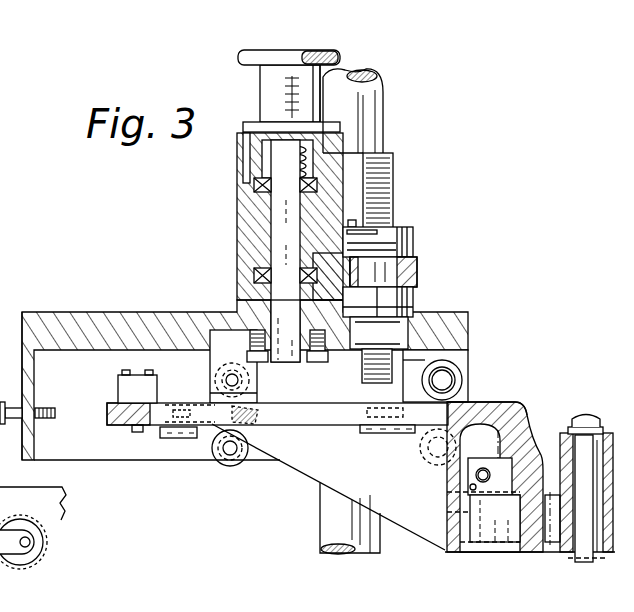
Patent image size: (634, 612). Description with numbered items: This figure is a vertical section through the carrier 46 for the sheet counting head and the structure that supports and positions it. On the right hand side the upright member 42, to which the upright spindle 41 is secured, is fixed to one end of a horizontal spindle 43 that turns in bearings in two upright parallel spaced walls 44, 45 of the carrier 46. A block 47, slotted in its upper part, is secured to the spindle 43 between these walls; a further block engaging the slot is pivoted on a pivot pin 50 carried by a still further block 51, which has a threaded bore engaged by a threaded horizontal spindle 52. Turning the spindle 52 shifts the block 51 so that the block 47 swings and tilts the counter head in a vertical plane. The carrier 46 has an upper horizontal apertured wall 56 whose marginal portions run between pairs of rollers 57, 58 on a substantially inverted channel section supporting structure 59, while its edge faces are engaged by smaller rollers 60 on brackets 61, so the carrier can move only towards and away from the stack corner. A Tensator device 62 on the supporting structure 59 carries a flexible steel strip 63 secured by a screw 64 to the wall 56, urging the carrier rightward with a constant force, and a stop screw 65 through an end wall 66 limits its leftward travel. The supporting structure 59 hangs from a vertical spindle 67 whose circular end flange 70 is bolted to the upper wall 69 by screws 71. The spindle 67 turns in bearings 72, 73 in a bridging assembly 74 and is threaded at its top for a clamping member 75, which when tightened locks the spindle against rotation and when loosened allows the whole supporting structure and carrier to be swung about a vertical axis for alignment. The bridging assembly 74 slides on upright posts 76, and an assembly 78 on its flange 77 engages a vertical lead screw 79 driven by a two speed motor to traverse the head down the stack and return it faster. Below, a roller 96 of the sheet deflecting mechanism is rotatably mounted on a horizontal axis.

The upright spindle 41 is at (583, 542).
The upright member 42 is at (600, 431).
The horizontal spindle 43 is at (527, 535).
The upright wall 44 is at (530, 453).
The upright wall 45 is at (457, 500).
The carrier 46 is at (347, 484).
The block 47 is at (490, 545).
The pivot pin 50 is at (505, 427).
The still further block 51 is at (468, 472).
The horizontal spindle 52 is at (528, 420).
The upper horizontal apertured wall 56 is at (317, 421).
The roller 57 is at (463, 378).
The roller 58 is at (251, 452).
The supporting structure 59 is at (26, 311).
The smaller roller 60 is at (173, 402).
The bracket 61 is at (184, 405).
The Tensator device 62 is at (260, 409).
The flexible steel strip 63 is at (218, 427).
The screw 64 is at (133, 430).
The stop screw 65 is at (48, 408).
The end wall 66 is at (30, 433).
The vertical spindle 67 is at (278, 228).
The upper wall 69 is at (118, 318).
The circular end flange 70 is at (287, 356).
The screw 71 is at (160, 312).
The bearing 72 is at (252, 185).
The bearing 73 is at (254, 278).
The bridging assembly 74 is at (236, 216).
The clamping member 75 is at (277, 80).
The upright post 76 is at (362, 112).
The flange 77 is at (417, 268).
The assembly 78 is at (413, 243).
The vertical lead screw 79 is at (393, 185).
The roller 96 is at (27, 556).